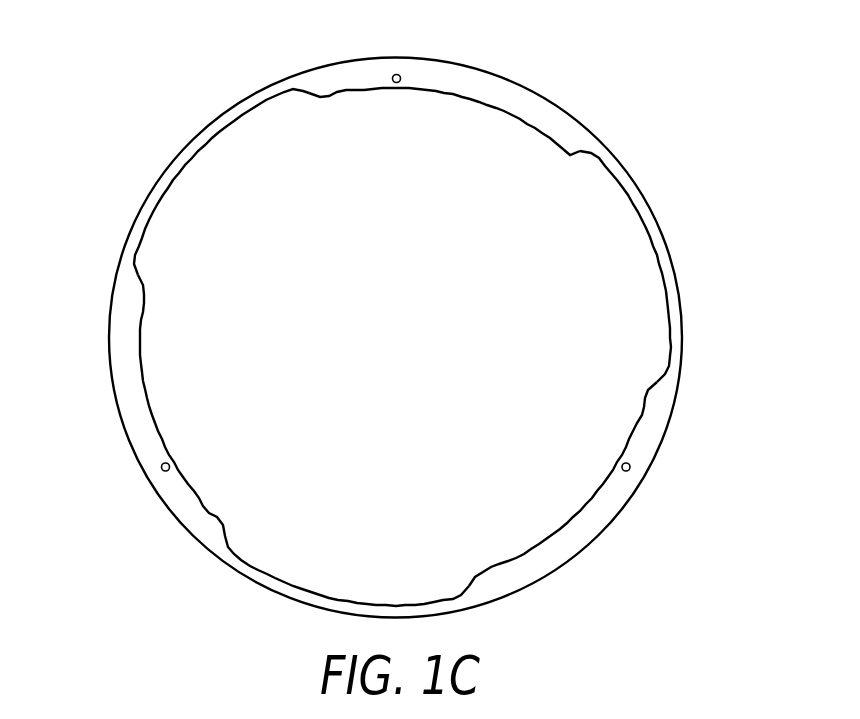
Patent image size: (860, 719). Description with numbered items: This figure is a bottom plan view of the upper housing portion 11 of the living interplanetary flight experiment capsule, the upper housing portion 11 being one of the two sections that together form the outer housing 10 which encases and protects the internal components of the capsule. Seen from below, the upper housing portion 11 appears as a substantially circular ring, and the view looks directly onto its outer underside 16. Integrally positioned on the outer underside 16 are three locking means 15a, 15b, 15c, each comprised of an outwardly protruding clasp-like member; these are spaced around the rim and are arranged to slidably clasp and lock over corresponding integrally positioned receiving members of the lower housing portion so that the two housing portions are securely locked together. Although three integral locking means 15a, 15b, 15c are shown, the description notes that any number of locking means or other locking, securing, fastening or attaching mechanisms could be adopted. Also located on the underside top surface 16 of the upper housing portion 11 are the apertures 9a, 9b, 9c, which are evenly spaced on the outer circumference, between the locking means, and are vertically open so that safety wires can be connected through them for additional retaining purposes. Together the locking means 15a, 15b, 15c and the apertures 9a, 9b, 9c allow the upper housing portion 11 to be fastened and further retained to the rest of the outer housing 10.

The outer housing 10 is at (737, 83).
The upper housing portion 11 is at (125, 192).
The locking means 15a is at (222, 139).
The locking means 15b is at (668, 239).
The locking means 15c is at (324, 583).
The aperture 9a is at (630, 467).
The aperture 9b is at (161, 467).
The aperture 9c is at (396, 74).
The outer underside 16 is at (408, 188).